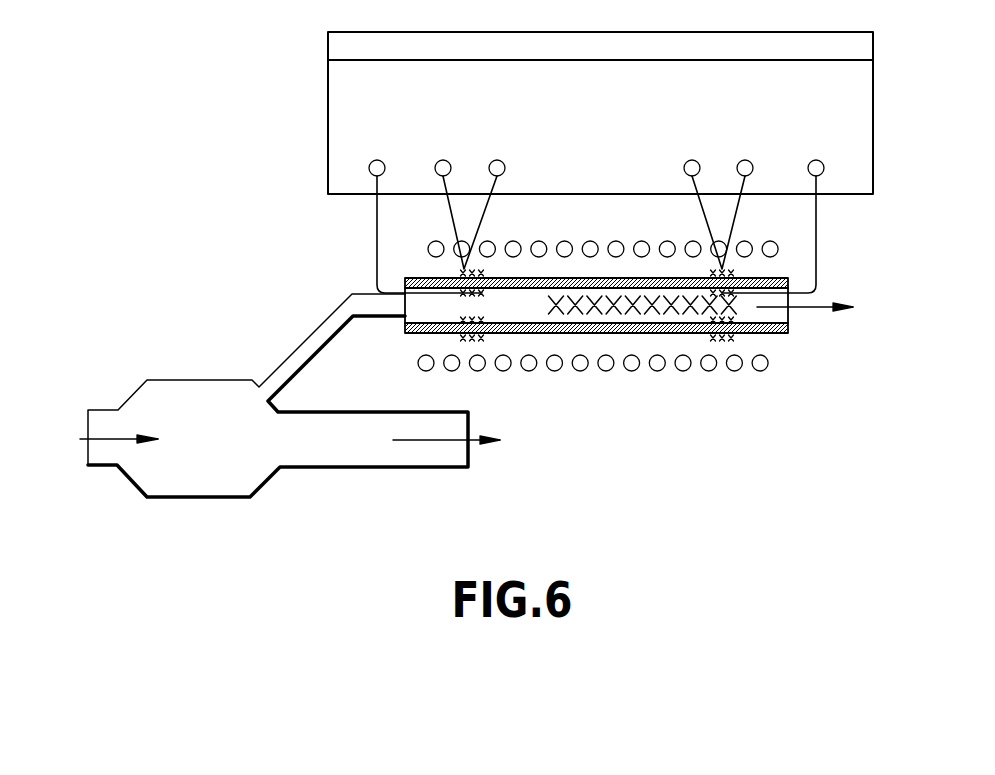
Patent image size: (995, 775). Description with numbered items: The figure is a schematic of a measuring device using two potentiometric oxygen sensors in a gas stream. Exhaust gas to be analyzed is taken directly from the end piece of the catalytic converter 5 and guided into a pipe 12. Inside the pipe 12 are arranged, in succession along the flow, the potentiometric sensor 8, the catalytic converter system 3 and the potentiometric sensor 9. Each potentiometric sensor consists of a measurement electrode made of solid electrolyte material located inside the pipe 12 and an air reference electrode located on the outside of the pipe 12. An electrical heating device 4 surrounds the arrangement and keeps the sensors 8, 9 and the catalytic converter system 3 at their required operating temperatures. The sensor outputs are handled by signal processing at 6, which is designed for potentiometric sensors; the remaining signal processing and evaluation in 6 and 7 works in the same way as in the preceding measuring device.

The catalytic converter system 3 is at (587, 314).
The electrical heating device 4 is at (657, 371).
The catalytic converter 5 is at (198, 395).
The signal processing 6 is at (337, 127).
The signal processing unit 7 is at (338, 50).
The potentiometric sensor 8 is at (481, 341).
The potentiometric sensor 9 is at (717, 341).
The pipe 12 is at (779, 336).